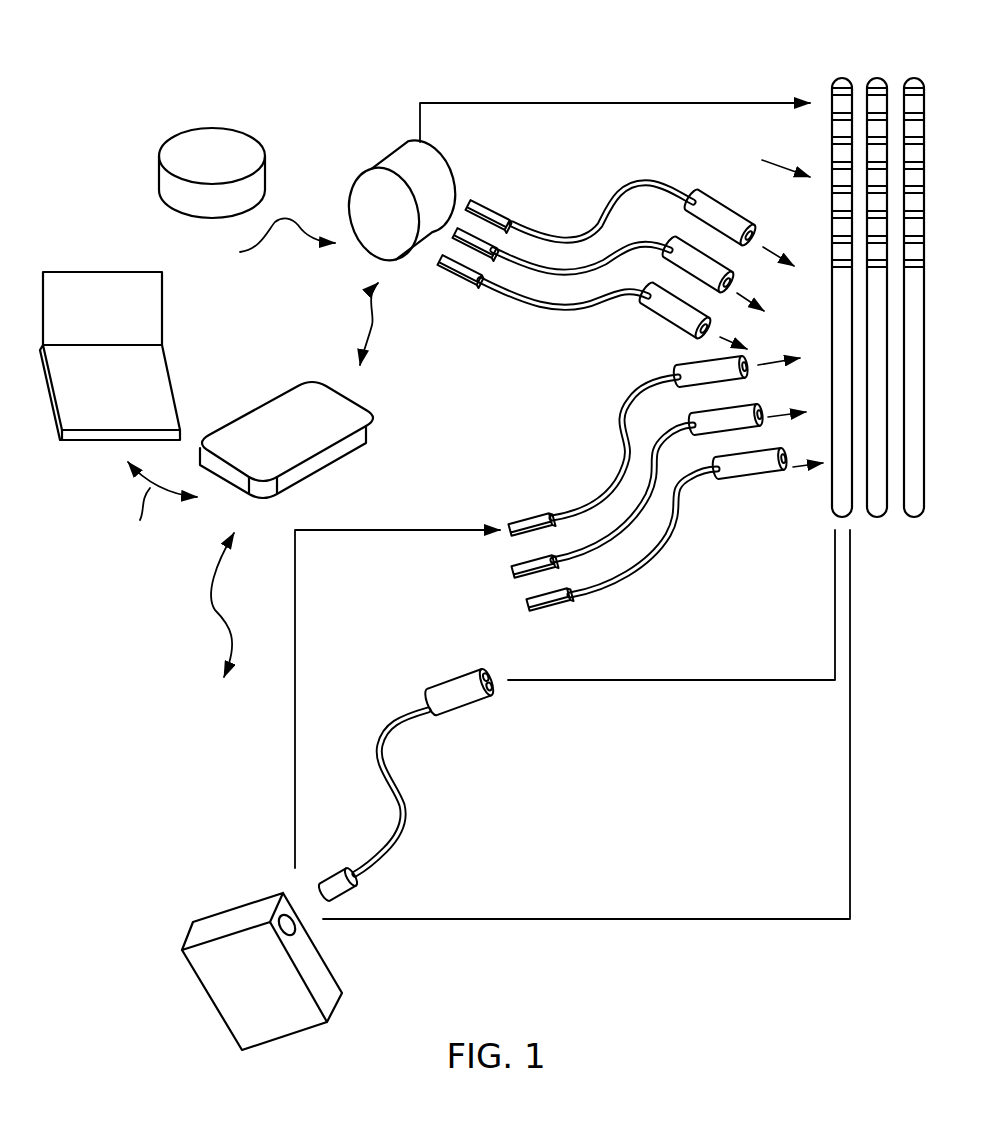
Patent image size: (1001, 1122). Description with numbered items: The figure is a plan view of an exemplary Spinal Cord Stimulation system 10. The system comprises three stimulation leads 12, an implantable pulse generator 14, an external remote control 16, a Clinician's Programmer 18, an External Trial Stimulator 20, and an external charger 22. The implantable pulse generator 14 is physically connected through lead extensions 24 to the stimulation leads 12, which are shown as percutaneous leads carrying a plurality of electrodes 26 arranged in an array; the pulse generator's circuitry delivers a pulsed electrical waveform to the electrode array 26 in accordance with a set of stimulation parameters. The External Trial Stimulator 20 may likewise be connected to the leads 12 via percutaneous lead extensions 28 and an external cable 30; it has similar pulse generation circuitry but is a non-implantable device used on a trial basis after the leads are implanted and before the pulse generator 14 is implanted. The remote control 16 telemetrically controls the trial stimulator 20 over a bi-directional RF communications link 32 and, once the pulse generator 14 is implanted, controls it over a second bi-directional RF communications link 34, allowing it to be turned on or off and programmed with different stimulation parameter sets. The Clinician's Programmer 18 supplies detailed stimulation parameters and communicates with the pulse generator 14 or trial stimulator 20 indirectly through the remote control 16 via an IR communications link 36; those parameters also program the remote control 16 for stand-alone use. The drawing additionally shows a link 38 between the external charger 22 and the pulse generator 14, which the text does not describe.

The SCS system 10 is at (583, 50).
The stimulation leads 12 is at (795, 267).
The implantable pulse generator 14 is at (383, 160).
The remote control 16 is at (300, 398).
The Clinician's Programmer 18 is at (88, 287).
The External Trial Stimulator 20 is at (233, 920).
The external charger 22 is at (214, 138).
The lead extensions 24 is at (637, 288).
The electrodes 26 is at (838, 118).
The percutaneous lead extensions 28 is at (588, 590).
The external cable 30 is at (402, 718).
The bi-directional RF communications link 32 is at (228, 648).
The bi-directional RF communications link 34 is at (375, 333).
The IR communications link 36 is at (162, 504).
The inductive link (charger to IPG) 38 is at (272, 241).